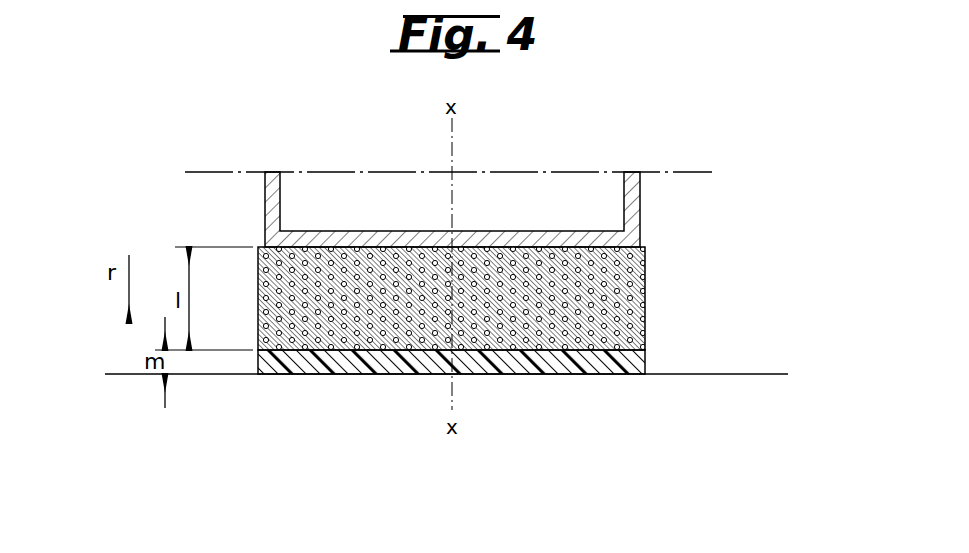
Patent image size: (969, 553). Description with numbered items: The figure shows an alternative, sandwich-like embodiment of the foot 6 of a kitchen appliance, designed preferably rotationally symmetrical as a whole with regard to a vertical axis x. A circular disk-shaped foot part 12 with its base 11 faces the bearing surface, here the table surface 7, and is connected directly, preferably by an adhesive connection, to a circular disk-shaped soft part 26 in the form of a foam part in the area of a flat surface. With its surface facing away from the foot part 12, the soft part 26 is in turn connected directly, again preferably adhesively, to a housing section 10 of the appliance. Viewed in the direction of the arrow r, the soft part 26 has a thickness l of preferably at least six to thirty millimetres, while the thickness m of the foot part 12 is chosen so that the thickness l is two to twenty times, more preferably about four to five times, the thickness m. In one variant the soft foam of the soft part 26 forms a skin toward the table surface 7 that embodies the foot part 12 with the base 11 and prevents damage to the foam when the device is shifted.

The foot 6 is at (625, 143).
The table surface 7 is at (767, 375).
The housing section 10 is at (263, 213).
The base 11 is at (610, 373).
The foot part 12 is at (552, 360).
The soft part 26 is at (615, 298).